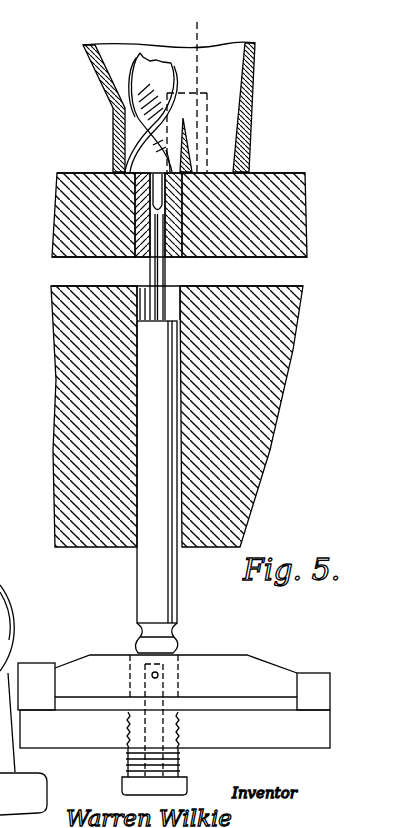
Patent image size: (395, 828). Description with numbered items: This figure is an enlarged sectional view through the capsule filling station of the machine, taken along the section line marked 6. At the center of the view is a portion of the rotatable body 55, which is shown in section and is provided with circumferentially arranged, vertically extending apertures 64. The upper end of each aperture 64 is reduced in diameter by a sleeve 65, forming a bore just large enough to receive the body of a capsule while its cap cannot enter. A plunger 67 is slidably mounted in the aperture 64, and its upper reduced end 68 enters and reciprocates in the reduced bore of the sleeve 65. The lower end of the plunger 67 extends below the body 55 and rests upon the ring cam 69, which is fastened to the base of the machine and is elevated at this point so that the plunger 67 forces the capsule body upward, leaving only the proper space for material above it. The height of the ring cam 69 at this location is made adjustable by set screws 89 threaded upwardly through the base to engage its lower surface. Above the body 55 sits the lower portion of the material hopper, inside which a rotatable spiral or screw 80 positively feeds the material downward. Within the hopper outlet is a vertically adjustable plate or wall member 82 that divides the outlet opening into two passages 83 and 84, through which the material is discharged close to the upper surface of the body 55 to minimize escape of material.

The section line 6- 6 is at (268, 165).
The body 55 is at (80, 421).
The apertures 64 is at (172, 307).
The sleeves 65 is at (137, 240).
The plunger 67 is at (162, 468).
The upper reduced end 68 is at (167, 275).
The ring cam 69 is at (247, 657).
The spiral or screw 80 is at (150, 97).
The plate or wall member 82 is at (190, 143).
The passage 83 is at (138, 135).
The passage 84 is at (218, 147).
The set screws 89 is at (180, 766).